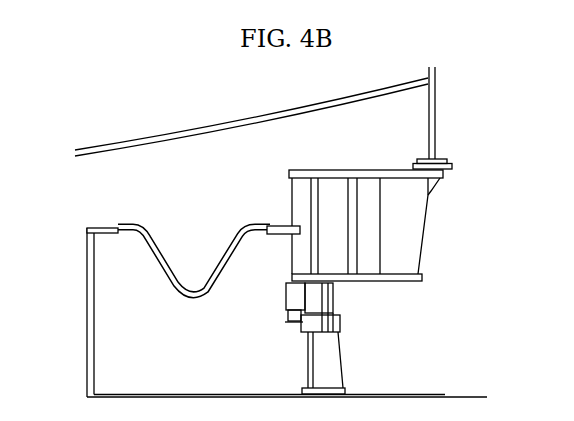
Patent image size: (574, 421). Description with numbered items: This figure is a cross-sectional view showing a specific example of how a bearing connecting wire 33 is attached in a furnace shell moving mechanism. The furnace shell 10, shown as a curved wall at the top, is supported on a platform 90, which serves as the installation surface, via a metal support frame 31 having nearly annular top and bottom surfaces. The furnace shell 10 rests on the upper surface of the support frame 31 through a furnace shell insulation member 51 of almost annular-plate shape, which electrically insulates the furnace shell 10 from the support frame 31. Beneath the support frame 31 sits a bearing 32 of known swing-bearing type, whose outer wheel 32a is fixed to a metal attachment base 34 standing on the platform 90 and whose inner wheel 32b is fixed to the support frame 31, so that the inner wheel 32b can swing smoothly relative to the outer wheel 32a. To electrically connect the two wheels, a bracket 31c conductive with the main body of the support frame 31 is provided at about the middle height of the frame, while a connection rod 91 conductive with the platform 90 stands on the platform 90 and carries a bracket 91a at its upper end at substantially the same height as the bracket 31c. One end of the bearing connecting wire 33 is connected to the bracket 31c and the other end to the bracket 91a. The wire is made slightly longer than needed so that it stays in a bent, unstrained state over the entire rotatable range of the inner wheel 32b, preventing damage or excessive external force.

The furnace shell 10 is at (210, 128).
The support frame 31 is at (375, 170).
The bracket 31c is at (282, 225).
The bearing 32 is at (352, 305).
The outer wheel 32a is at (315, 308).
The inner wheel 32b is at (297, 298).
The bearing connecting wire 33 is at (160, 248).
The attachment base 34 is at (332, 360).
The furnace shell insulation member 51 is at (452, 170).
The platform 90 is at (443, 409).
The connection rod 91 is at (88, 280).
The bracket 91a is at (98, 225).